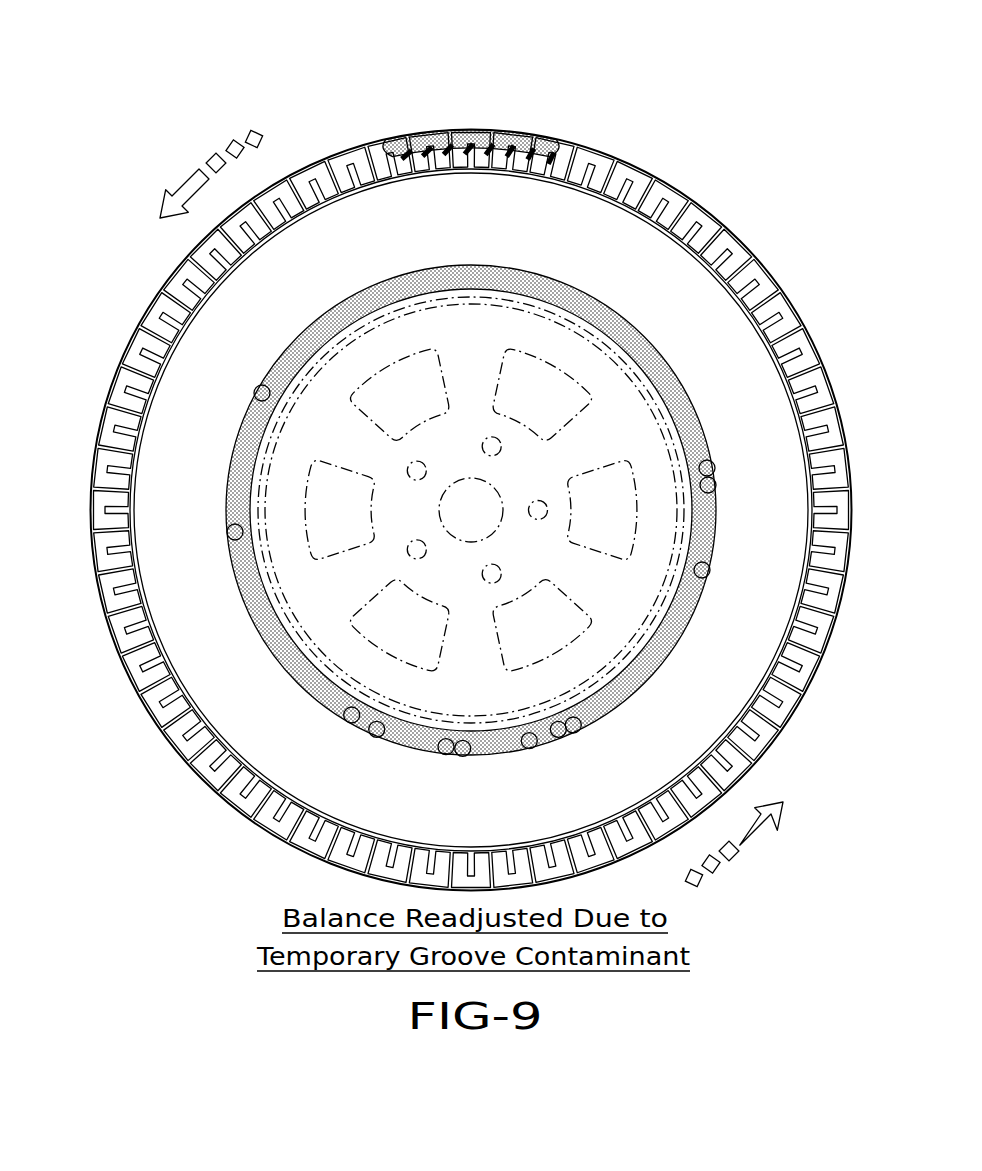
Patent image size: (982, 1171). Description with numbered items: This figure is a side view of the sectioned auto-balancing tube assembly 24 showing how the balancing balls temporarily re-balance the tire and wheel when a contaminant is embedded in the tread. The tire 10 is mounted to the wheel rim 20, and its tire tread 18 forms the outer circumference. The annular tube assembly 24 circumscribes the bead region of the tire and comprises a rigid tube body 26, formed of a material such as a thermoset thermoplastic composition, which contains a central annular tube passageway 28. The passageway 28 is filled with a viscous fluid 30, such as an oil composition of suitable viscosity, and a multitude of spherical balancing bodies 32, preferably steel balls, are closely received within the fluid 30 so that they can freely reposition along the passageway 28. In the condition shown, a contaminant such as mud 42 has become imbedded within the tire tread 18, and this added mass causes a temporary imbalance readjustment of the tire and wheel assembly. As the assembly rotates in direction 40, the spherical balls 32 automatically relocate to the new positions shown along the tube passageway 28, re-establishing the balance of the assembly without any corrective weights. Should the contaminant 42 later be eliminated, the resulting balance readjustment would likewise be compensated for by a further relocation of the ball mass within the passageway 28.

The tire 10 is at (291, 90).
The tire tread 18 is at (728, 240).
The wheel rim 20 is at (603, 432).
The tube assembly 24 is at (476, 260).
The tube body 26 is at (292, 682).
The tube passageway 28 is at (657, 656).
The viscous fluid 30 is at (273, 632).
The spherical balancing bodies 32 is at (258, 389).
The direction of rotation 40 is at (195, 185).
The contaminant 42 is at (520, 132).